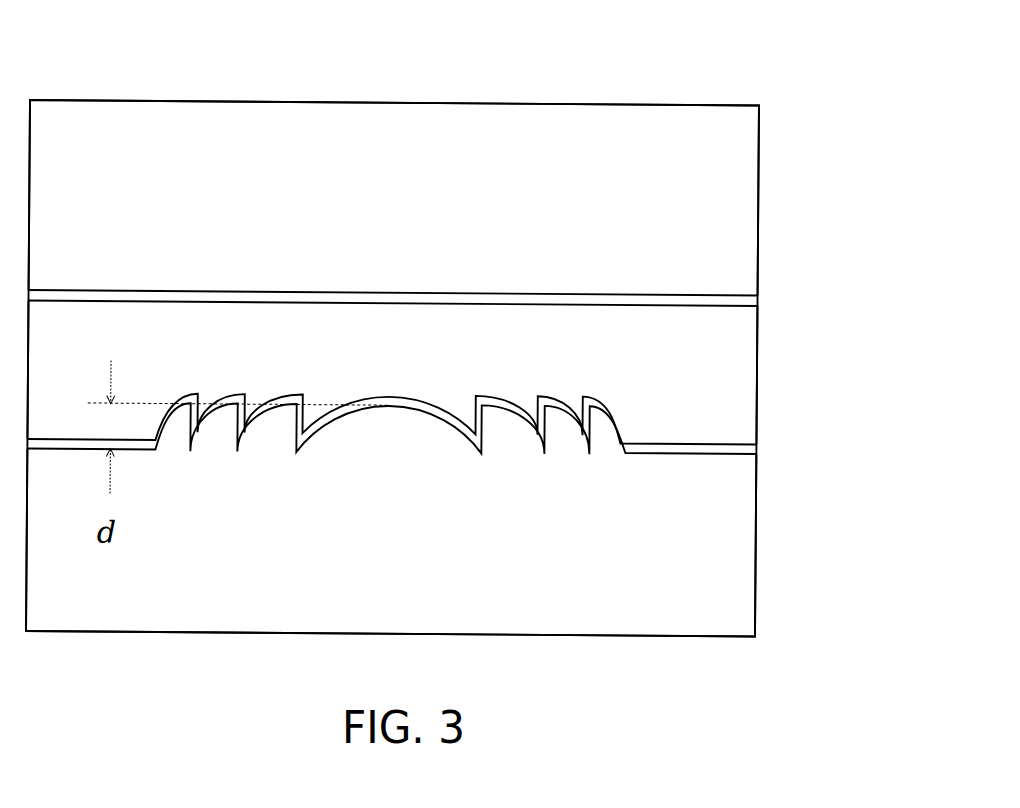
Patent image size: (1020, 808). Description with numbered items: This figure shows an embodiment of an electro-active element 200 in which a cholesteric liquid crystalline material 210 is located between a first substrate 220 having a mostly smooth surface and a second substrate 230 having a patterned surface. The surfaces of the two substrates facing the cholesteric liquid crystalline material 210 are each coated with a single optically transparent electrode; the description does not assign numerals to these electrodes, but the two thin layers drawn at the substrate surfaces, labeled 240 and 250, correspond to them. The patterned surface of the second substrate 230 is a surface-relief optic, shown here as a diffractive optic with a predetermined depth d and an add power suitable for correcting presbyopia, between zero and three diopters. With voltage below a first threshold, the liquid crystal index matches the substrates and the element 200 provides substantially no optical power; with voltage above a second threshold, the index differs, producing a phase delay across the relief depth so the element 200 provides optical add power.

The electro-active element 200 is at (126, 52).
The cholesteric liquid crystalline material 210 is at (660, 346).
The first substrate 220 is at (730, 158).
The second substrate 230 is at (608, 545).
The upper electrode 240 is at (758, 300).
The patterned lower electrode 250 is at (758, 452).